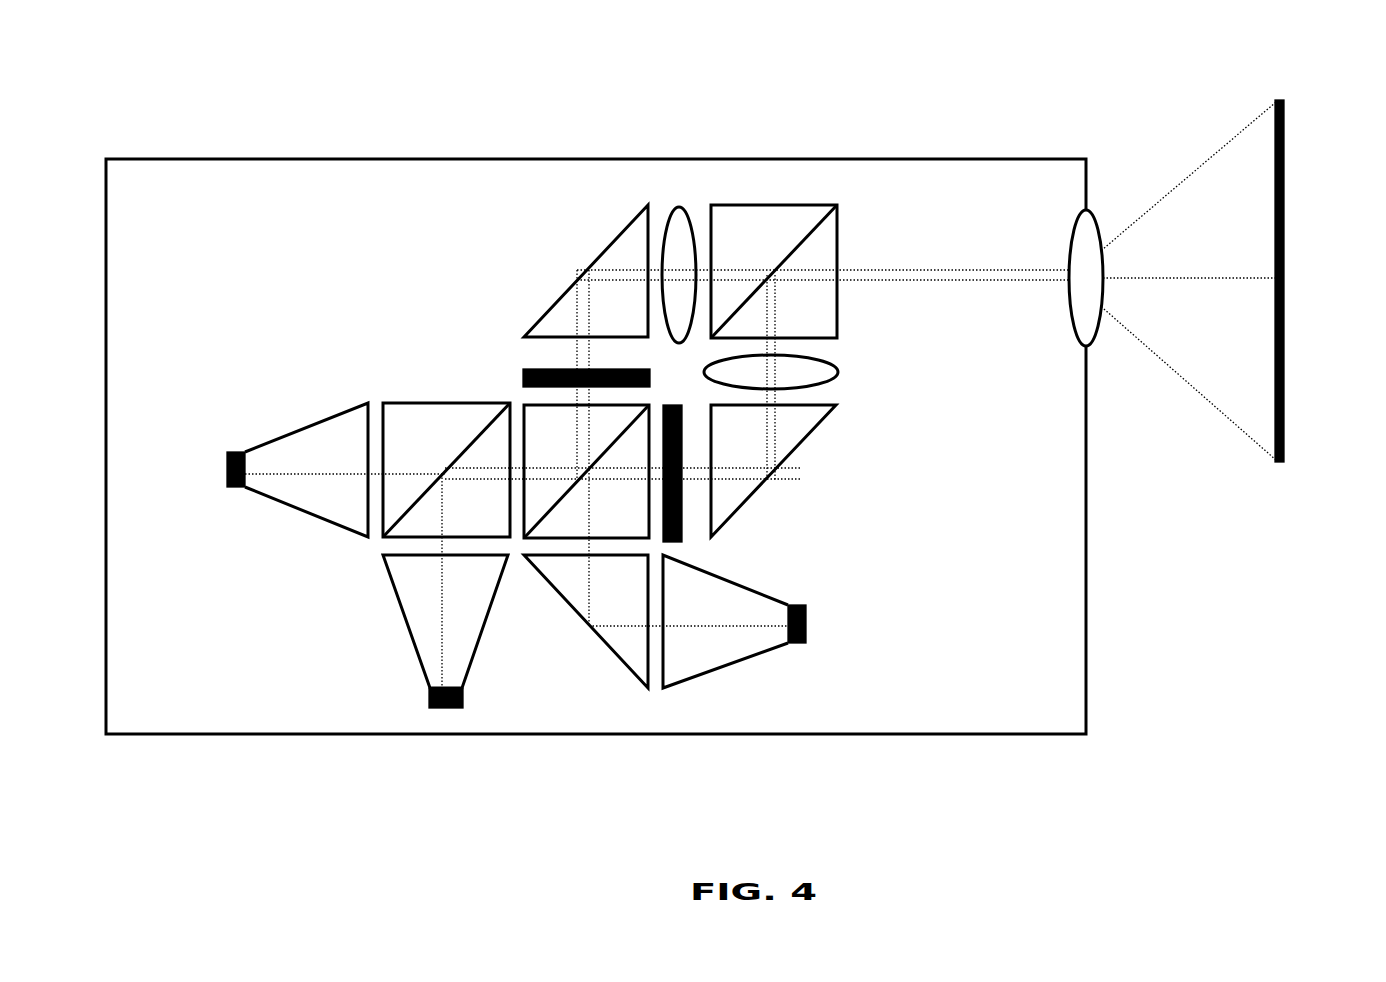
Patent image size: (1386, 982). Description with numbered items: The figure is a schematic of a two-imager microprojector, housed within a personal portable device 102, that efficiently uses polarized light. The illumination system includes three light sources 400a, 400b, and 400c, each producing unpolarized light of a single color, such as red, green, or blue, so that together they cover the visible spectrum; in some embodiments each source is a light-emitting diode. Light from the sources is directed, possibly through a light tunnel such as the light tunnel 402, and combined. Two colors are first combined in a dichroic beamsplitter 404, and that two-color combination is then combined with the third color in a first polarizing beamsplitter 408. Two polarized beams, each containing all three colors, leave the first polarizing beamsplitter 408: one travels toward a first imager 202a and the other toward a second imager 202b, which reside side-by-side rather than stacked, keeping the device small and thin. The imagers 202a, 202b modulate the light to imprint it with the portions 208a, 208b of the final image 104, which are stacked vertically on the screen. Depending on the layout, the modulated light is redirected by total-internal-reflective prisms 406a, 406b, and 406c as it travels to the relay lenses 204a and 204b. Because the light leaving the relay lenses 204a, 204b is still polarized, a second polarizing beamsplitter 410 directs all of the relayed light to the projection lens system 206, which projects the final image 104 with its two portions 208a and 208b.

The personal portable device 102 is at (170, 195).
The final image 104 is at (1277, 98).
The first imager 202a is at (518, 377).
The second imager 202b is at (688, 544).
The relay lens 204a is at (679, 203).
The relay lens 204b is at (841, 372).
The projection lens system 206 is at (1064, 300).
The portion of the final image 208a is at (1327, 286).
The portion of the final image 208b is at (1327, 104).
The light source 400a is at (238, 446).
The light source 400b is at (426, 697).
The light source 400c is at (800, 598).
The light tunnel 402 is at (313, 415).
The dichroic beamsplitter 404 is at (447, 399).
The total-internal-reflective prism 406a is at (560, 288).
The total-internal-reflective prism 406b is at (794, 460).
The total-internal-reflective prism 406c is at (578, 630).
The first polarizing beamsplitter 408 is at (573, 440).
The second polarizing beamsplitter 410 is at (772, 245).